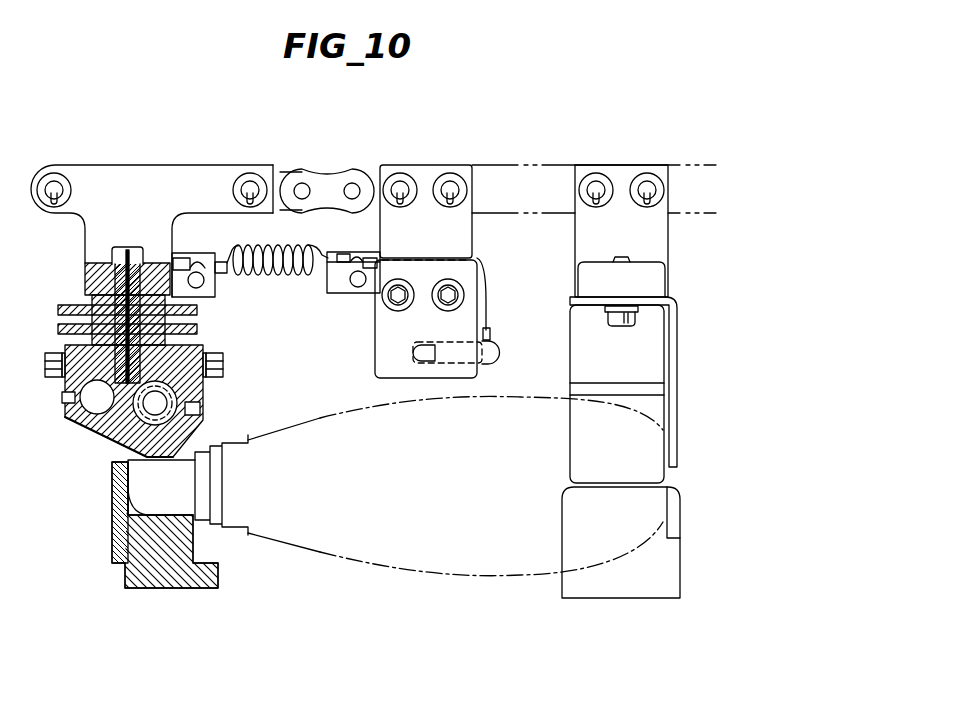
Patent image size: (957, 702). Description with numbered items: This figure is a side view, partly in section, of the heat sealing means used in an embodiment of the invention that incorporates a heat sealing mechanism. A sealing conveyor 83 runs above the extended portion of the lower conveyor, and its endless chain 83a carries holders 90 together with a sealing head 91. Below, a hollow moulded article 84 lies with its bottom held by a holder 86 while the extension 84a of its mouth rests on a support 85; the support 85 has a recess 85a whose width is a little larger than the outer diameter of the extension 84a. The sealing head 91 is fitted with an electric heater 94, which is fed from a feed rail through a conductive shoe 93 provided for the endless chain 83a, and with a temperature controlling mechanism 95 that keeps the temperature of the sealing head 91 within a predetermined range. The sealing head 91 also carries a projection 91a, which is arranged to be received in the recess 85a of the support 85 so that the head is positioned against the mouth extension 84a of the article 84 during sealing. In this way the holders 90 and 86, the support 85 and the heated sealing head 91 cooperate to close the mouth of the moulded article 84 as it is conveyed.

The sealing conveyor 83 is at (518, 166).
The endless chain 83a is at (308, 167).
The hollow moulded article 84 is at (425, 558).
The extension of the mouth 84a is at (167, 500).
The support 85 is at (208, 578).
The recess 85a is at (118, 563).
The holder 86 is at (578, 587).
The holder 90 is at (583, 350).
The sealing head 91 is at (148, 390).
The projection 91a is at (155, 444).
The conductive shoe 93 is at (380, 333).
The electric heater 94 is at (205, 397).
The temperature controlling mechanism 95 is at (95, 416).